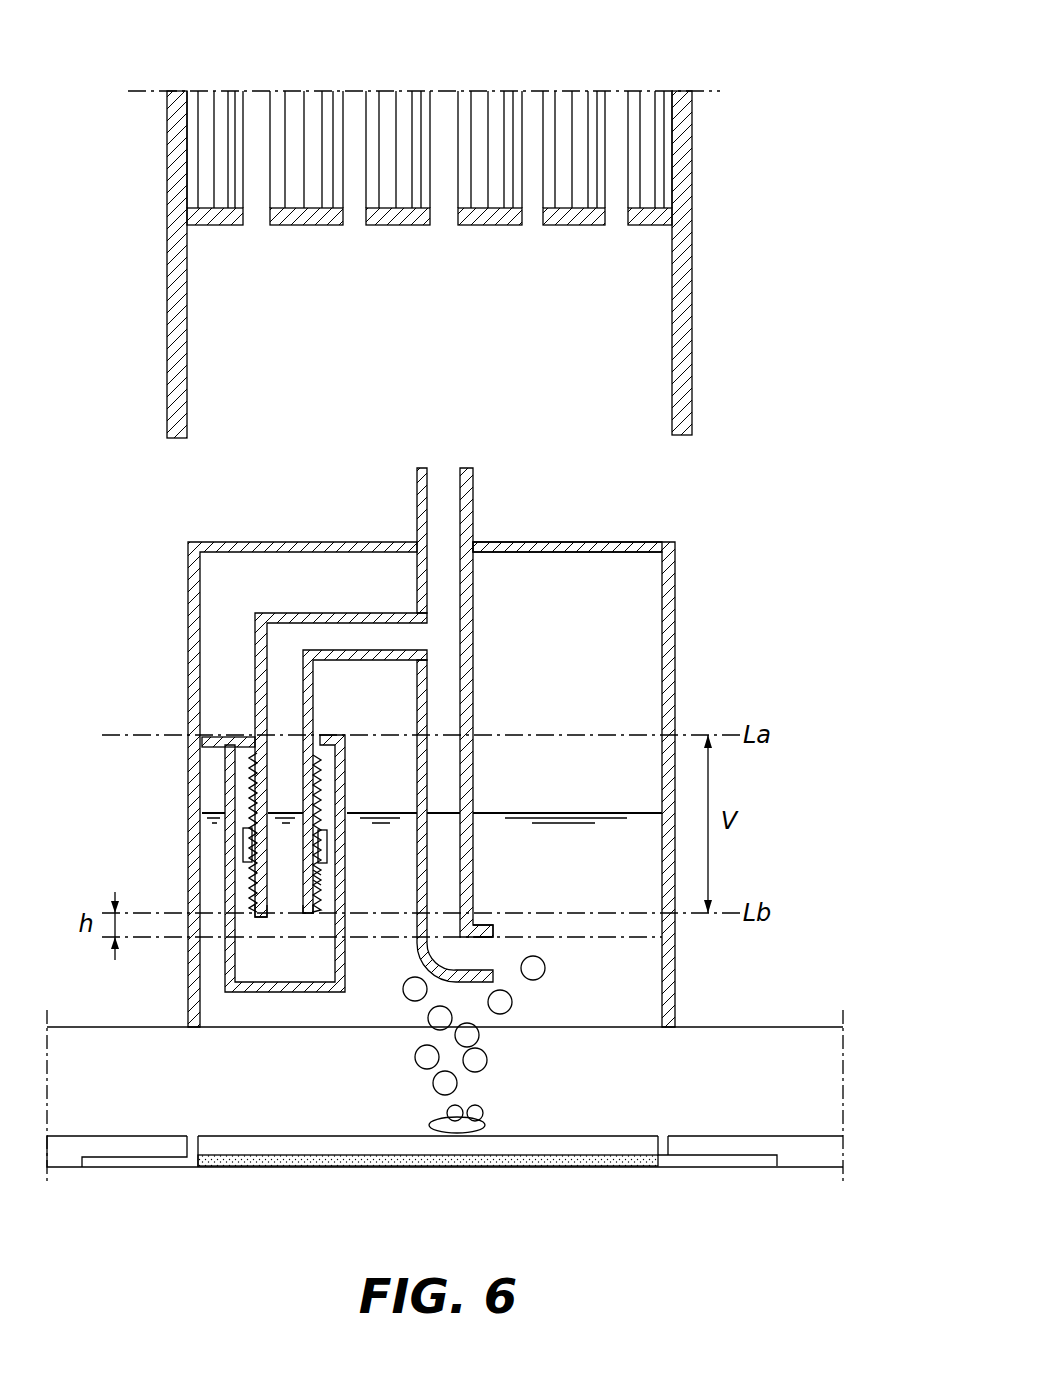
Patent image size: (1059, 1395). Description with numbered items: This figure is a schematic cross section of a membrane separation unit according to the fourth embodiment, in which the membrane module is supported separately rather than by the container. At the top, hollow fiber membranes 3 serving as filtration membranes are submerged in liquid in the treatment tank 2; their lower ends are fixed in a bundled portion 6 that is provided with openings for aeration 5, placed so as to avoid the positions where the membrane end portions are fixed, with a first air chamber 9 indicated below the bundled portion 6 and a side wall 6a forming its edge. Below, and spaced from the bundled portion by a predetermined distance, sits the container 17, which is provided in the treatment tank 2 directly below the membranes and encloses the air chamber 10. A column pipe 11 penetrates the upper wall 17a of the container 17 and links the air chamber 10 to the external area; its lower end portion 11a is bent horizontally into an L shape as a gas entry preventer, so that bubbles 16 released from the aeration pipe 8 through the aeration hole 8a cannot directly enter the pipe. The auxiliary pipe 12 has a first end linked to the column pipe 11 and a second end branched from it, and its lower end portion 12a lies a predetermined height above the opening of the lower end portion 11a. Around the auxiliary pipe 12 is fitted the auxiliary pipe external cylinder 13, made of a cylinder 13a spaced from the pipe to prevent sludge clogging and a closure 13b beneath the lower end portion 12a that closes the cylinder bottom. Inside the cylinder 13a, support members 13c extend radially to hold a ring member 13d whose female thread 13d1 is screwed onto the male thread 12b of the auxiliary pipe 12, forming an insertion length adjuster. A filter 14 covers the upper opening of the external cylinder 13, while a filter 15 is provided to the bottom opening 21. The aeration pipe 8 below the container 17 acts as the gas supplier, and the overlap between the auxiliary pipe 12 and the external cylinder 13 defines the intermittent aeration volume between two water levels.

The treatment tank 2 is at (803, 668).
The hollow fiber membranes 3 is at (502, 98).
The openings for aeration 5 is at (445, 98).
The bundled portion 6 is at (696, 180).
The side wall of head unit 6a is at (692, 352).
The aeration pipe 8 is at (732, 1122).
The aeration hole 8a is at (463, 1135).
The first air chamber 9 is at (434, 335).
The air chamber 10 is at (565, 629).
The column pipe 11 is at (473, 870).
The lower end portion of the column pipe 11a is at (495, 932).
The auxiliary pipe 12 is at (245, 650).
The lower end portion of the auxiliary pipe 12a is at (257, 930).
The male thread 12b is at (256, 793).
The auxiliary pipe external cylinder 13 is at (212, 957).
The cylinder 13a is at (320, 741).
The closure 13b is at (332, 993).
The support member 13c is at (328, 843).
The ring member 13d is at (326, 833).
The female thread 13d1 is at (296, 890).
The filter 14 is at (244, 737).
The filter 15 is at (607, 1167).
The bubbles 16 is at (546, 975).
The container 17 is at (675, 640).
The upper wall 17a is at (527, 541).
The bottom opening 21 is at (305, 226).